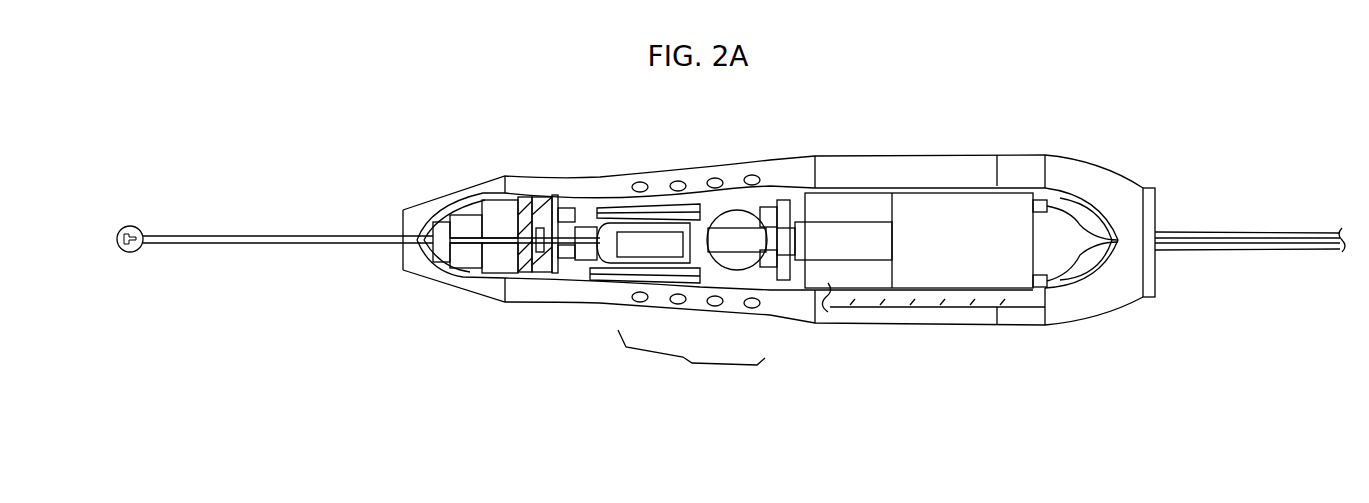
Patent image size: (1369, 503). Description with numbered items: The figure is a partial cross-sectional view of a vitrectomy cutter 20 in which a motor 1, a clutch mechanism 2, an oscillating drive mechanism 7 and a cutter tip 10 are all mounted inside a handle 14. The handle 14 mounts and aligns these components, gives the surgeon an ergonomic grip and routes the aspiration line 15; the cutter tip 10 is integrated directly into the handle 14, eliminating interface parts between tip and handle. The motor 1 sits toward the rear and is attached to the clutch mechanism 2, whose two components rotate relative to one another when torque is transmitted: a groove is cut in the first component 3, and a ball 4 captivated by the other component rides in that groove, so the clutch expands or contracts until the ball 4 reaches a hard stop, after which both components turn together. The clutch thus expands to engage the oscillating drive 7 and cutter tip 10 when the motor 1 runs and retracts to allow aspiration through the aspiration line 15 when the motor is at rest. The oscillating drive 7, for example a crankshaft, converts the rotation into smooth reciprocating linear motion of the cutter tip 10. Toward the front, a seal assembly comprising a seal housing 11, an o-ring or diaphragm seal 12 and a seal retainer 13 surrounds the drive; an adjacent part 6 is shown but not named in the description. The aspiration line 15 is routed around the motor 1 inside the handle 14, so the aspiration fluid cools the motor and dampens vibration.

The motor 1 is at (945, 309).
The clutch mechanism 2 is at (691, 361).
The first component 3 is at (637, 259).
The ball 4 is at (747, 214).
The bearing 6 is at (573, 259).
The oscillating drive mechanism 7 is at (612, 264).
The cutter tip 10 is at (233, 268).
The seal housing 11 is at (542, 282).
The o-ring or diaphragm seal 12 is at (530, 259).
The seal retainer 13 is at (508, 257).
The handle 14 is at (1093, 154).
The aspiration line 15 is at (1262, 217).
The vitrectomy cutter 20 is at (488, 141).